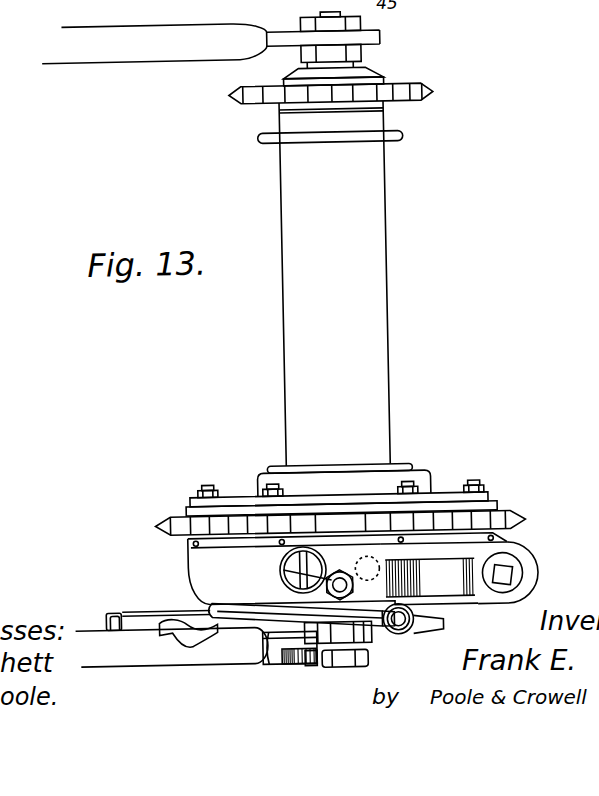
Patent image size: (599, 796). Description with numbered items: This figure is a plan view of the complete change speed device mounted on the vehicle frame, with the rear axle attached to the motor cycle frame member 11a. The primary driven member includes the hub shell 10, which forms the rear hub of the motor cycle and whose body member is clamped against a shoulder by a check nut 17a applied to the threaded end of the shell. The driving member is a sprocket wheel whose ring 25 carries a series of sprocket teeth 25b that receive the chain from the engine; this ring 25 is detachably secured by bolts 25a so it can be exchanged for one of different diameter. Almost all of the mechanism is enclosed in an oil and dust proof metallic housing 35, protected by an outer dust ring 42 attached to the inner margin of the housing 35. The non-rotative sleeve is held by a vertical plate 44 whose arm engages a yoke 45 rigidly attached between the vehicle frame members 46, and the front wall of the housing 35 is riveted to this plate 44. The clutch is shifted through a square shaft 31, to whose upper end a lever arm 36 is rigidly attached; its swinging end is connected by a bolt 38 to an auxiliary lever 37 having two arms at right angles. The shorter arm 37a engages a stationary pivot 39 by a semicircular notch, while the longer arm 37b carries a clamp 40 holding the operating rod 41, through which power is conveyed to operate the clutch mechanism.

The hub shell 10 is at (394, 419).
The frame member 11a is at (275, 699).
The check nut 17a is at (265, 482).
The ring 25 is at (188, 510).
The bolts 25a is at (206, 484).
The sprocket teeth 25b is at (540, 509).
The square shaft 31 is at (507, 576).
The housing 35 is at (189, 560).
The lever arm 36 is at (501, 565).
The auxiliary lever 37 is at (356, 606).
The shorter arm 37a is at (325, 583).
The longer arm 37b is at (378, 618).
The bolt 38 is at (279, 565).
The stationary pivot 39 is at (372, 563).
The clamp 40 is at (397, 637).
The operating rod 41 is at (230, 603).
The outer dust ring 42 is at (187, 540).
The plate 44 is at (226, 620).
The yoke 45 is at (173, 617).
The frame members 46 is at (94, 625).